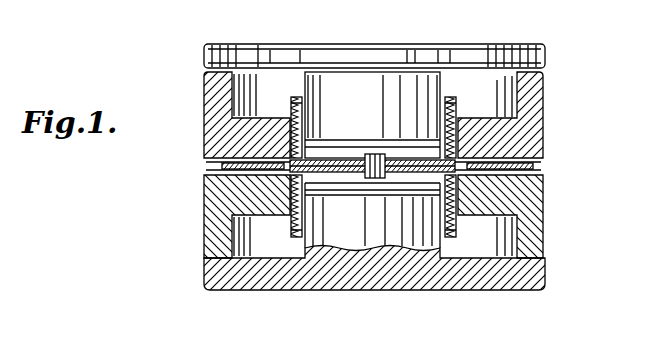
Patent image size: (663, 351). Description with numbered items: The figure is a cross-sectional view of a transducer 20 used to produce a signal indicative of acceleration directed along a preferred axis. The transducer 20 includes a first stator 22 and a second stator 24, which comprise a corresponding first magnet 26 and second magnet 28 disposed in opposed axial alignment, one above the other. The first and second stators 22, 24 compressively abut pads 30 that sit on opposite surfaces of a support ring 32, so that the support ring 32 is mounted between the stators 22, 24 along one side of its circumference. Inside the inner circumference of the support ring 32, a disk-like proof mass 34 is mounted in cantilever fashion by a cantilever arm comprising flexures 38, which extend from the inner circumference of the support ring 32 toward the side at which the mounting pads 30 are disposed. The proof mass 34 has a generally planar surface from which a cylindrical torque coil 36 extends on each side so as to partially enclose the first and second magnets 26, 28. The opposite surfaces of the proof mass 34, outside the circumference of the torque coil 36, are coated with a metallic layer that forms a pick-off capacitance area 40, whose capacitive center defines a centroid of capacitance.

The transducer 20 is at (190, 262).
The first stator 22 is at (203, 230).
The second stator 24 is at (373, 109).
The first magnet 26 is at (364, 252).
The second magnet 28 is at (366, 79).
The pads 30 is at (215, 161).
The support ring 32 is at (215, 168).
The proof mass 34 is at (398, 160).
The torque coil 36 is at (292, 107).
The flexures 38 is at (490, 147).
The pick-off capacitance area 40 is at (272, 145).